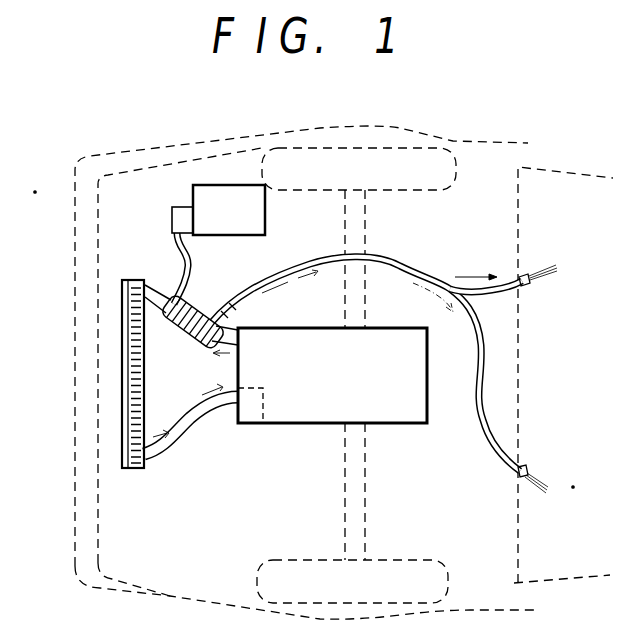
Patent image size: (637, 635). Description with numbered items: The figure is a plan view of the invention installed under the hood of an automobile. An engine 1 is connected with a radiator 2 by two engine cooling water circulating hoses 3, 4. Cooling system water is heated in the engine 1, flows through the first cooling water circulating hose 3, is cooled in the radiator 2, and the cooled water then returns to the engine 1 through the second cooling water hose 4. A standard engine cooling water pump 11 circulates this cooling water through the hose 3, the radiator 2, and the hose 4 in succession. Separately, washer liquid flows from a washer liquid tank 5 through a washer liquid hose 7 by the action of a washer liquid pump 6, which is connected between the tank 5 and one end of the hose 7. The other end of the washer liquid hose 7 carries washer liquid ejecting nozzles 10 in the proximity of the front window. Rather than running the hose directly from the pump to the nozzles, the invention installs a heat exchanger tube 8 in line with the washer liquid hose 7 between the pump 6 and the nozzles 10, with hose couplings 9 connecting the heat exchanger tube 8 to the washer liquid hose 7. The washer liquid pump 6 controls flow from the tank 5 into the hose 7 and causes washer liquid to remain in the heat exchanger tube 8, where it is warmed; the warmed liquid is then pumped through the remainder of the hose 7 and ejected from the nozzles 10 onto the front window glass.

The engine 1 is at (292, 403).
The radiator 2 is at (127, 383).
The first cooling water circulating hose 3 is at (153, 287).
The second cooling water hose 4 is at (187, 440).
The washer liquid tank 5 is at (233, 215).
The washer liquid pump 6 is at (185, 217).
The washer liquid hose 7 is at (190, 264).
The heat exchanger tube 8 is at (191, 334).
The hose couplings 9 is at (240, 300).
The washer liquid ejecting nozzles 10 is at (523, 277).
The engine cooling water pump 11 is at (237, 417).